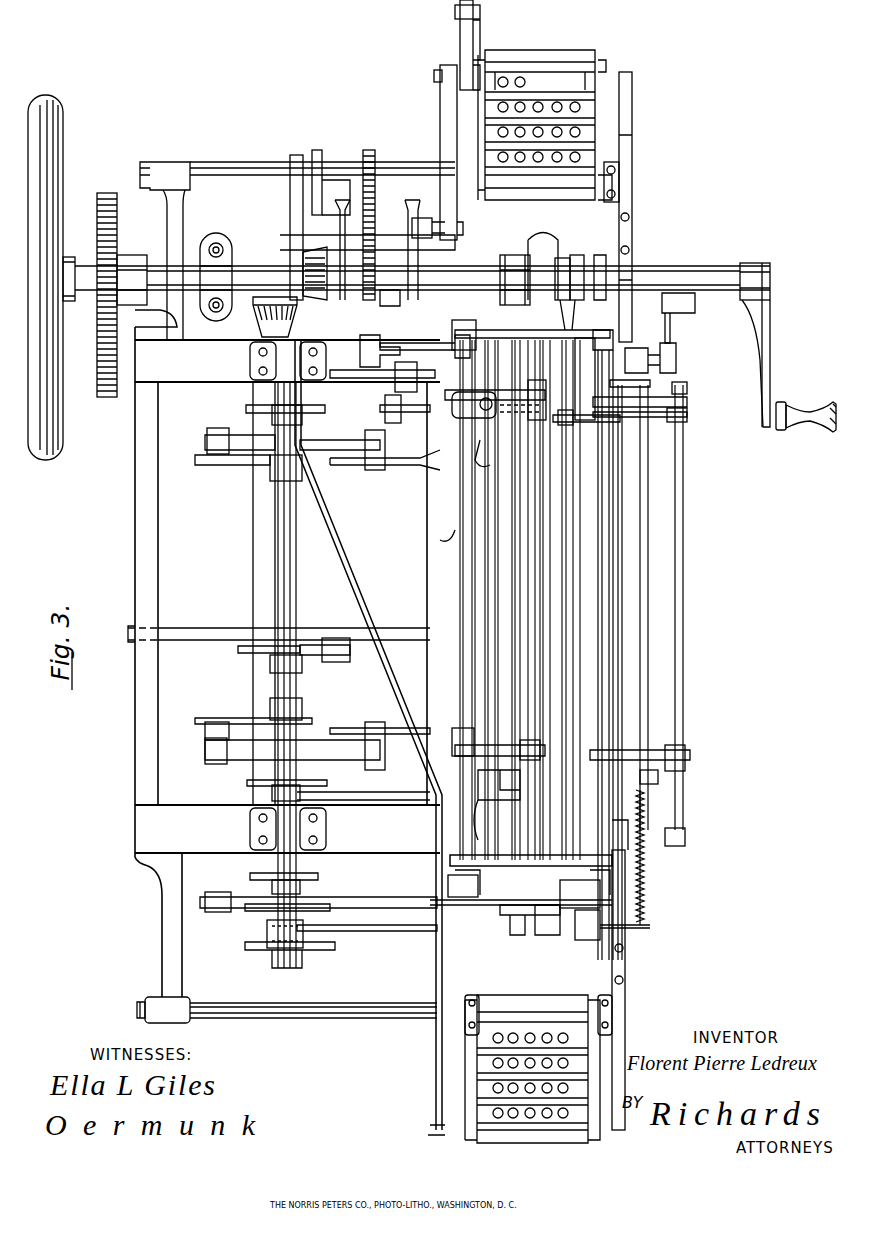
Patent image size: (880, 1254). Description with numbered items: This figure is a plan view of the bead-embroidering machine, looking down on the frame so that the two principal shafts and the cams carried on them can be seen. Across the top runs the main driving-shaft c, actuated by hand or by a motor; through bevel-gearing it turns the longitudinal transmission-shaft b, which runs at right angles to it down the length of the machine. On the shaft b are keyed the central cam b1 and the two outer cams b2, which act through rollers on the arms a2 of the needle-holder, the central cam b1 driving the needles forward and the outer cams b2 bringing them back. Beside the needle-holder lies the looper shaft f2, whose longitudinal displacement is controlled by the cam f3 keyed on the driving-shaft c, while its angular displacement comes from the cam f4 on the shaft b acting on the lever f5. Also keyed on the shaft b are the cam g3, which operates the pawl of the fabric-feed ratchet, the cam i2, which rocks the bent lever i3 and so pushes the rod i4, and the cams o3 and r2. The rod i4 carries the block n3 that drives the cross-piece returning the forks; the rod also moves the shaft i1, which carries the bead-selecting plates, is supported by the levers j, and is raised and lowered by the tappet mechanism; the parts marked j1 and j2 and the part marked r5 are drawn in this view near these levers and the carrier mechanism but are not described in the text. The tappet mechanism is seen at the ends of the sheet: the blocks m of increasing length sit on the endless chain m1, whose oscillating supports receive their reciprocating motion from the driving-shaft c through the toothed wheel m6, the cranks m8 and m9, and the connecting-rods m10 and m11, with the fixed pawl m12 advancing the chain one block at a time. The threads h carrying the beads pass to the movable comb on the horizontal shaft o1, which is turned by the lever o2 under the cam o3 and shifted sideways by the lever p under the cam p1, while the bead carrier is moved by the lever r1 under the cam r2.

The arms a2 is at (350, 460).
The longitudinal shaft b is at (285, 556).
The central cam b1 is at (248, 652).
The outer cams b2 is at (240, 465).
The main driving-shaft c is at (470, 285).
The looper shaft f2 is at (590, 575).
The cam f3 is at (568, 262).
The cam f4 is at (250, 876).
The lever f5 is at (538, 920).
The cam g3 is at (250, 782).
The thread carrying the beads or pearls h is at (362, 352).
The shaft i1 is at (540, 585).
The cam i2 is at (246, 409).
The bent lever i3 is at (395, 412).
The rod i4 is at (505, 388).
The levers j is at (400, 350).
The block j1 is at (488, 770).
The link j2 is at (515, 630).
The blocks m is at (548, 160).
The endless chain m1 is at (369, 150).
The toothed wheel m6 is at (402, 300).
The crank m8 is at (432, 238).
The crank m9 is at (316, 150).
The connecting-rod m10 is at (444, 152).
The connecting-rod m11 is at (352, 590).
The fixed pawl m12 is at (632, 172).
The block n3 is at (572, 425).
The horizontal shaft o1 is at (480, 700).
The lever o2 is at (403, 931).
The cam o3 is at (320, 950).
The lever p is at (640, 352).
The cam p1 is at (678, 355).
The lever r1 is at (372, 908).
The cam r2 is at (267, 928).
The block r5 is at (543, 425).